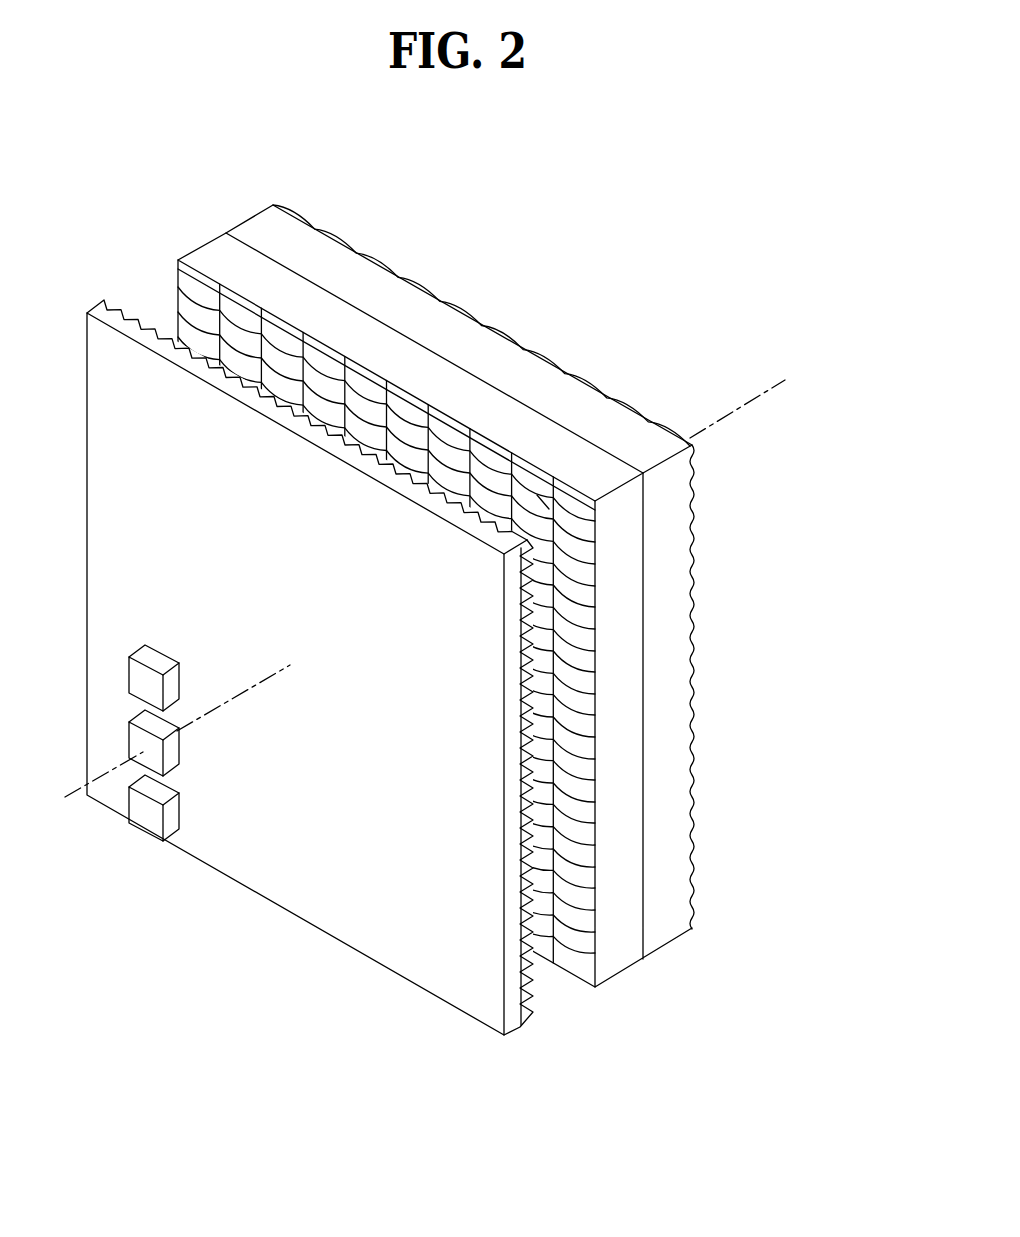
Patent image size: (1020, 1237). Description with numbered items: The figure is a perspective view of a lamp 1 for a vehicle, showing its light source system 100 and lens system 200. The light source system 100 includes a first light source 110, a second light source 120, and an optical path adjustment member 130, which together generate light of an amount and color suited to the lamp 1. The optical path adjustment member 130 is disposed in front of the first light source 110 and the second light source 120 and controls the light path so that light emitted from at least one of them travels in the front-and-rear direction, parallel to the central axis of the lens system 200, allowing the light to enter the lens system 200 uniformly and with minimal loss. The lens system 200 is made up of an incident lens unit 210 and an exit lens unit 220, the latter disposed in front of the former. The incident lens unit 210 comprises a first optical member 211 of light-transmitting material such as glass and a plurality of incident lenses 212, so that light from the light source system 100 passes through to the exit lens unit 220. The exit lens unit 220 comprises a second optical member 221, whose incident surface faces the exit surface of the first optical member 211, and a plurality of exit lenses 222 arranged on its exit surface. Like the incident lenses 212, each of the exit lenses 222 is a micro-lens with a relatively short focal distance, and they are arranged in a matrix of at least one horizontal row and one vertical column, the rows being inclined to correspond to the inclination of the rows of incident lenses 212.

The lamp 1 is at (735, 195).
The light source system 100 is at (83, 937).
The first light source 110 is at (173, 750).
The second light source 120 is at (138, 680).
The optical path adjustment member 130 is at (243, 862).
The lens system 200 is at (843, 507).
The incident lens unit 210 is at (795, 490).
The first optical member 211 is at (627, 503).
The incident lenses 212 is at (583, 518).
The exit lens unit 220 is at (668, 322).
The second optical member 221 is at (643, 443).
The exit lenses 222 is at (618, 398).